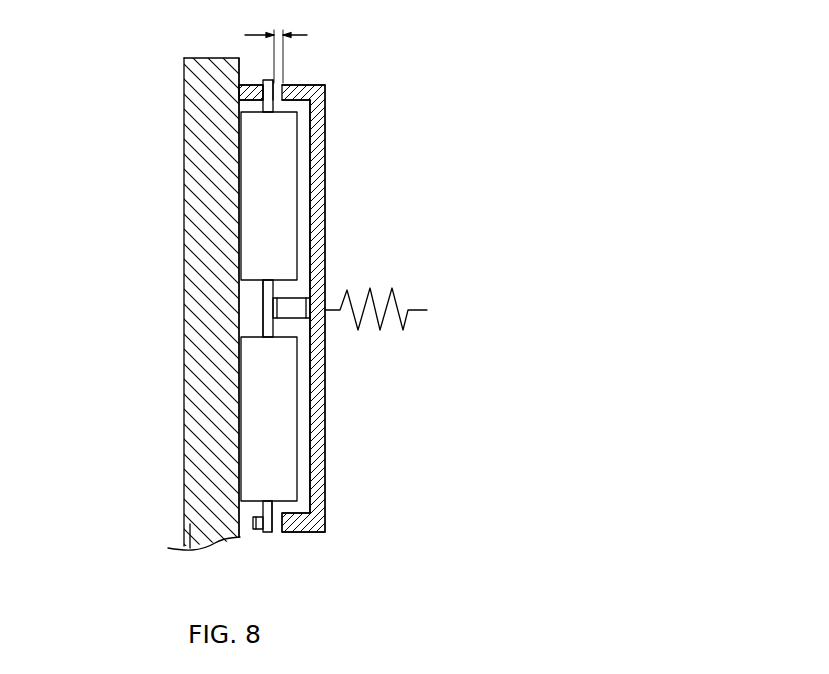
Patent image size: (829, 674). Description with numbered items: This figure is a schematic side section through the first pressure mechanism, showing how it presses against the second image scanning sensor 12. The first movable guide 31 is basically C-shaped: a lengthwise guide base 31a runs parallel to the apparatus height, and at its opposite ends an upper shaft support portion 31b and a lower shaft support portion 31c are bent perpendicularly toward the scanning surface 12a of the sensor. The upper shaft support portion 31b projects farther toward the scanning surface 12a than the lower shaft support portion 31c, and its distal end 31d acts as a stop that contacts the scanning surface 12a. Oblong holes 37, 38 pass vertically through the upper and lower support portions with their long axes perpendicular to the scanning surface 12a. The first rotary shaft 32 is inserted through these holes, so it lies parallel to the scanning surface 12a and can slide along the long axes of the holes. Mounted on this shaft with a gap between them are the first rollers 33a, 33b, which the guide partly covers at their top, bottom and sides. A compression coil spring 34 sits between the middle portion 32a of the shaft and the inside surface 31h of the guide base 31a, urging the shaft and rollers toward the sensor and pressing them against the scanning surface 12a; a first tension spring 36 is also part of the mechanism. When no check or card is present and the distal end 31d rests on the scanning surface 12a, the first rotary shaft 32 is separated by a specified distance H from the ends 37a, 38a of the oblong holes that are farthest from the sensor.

The second image scanning sensor 12 is at (212, 378).
The scanning surface 12a is at (243, 164).
The first movable guide 31 is at (325, 115).
The guide base 31a is at (316, 170).
The upper shaft support portion 31b is at (305, 85).
The lower shaft support portion 31c is at (317, 532).
The distal end 31d is at (258, 105).
The inside surface 31h is at (314, 362).
The first rotary shaft 32 is at (268, 297).
The middle portion 32a is at (262, 325).
The first roller 33a is at (258, 205).
The first roller 33b is at (255, 458).
The compression coil spring 34 is at (294, 303).
The first tension spring 36 is at (385, 318).
The oblong hole 37 is at (258, 98).
The end of oblong hole 37a is at (276, 100).
The oblong hole 38 is at (262, 532).
The end of oblong hole 38a is at (278, 522).
The specified distance H is at (290, 53).